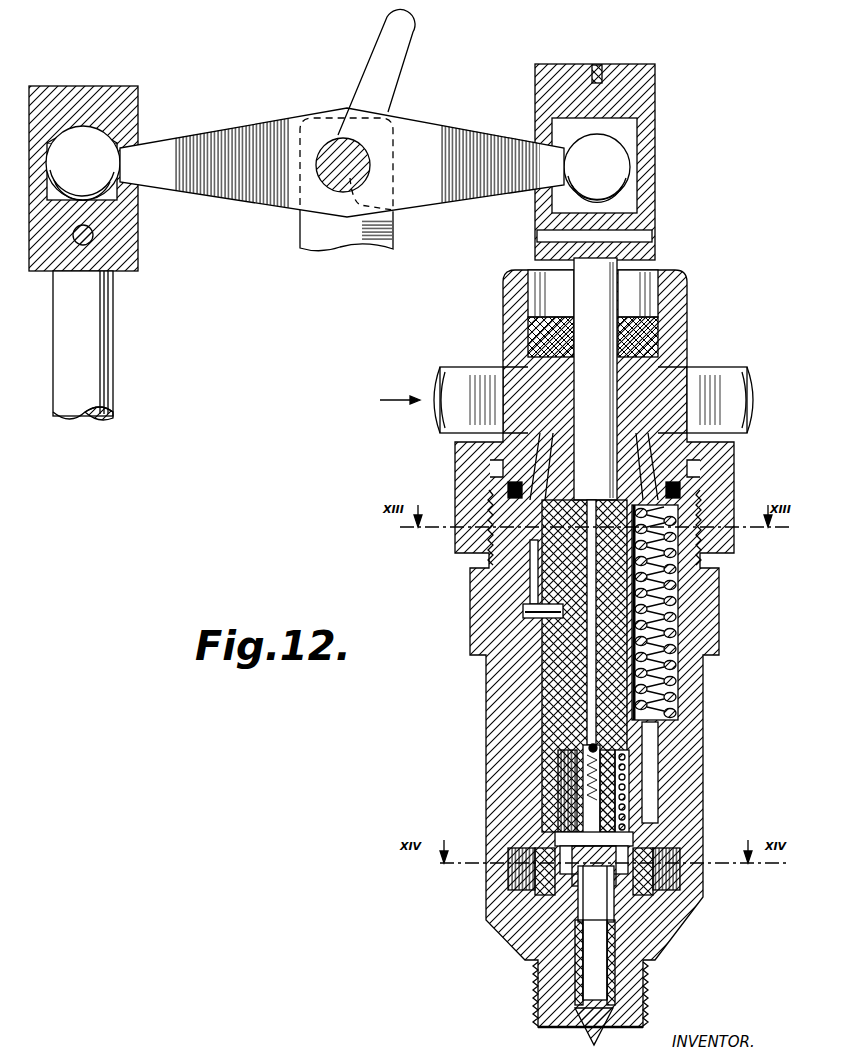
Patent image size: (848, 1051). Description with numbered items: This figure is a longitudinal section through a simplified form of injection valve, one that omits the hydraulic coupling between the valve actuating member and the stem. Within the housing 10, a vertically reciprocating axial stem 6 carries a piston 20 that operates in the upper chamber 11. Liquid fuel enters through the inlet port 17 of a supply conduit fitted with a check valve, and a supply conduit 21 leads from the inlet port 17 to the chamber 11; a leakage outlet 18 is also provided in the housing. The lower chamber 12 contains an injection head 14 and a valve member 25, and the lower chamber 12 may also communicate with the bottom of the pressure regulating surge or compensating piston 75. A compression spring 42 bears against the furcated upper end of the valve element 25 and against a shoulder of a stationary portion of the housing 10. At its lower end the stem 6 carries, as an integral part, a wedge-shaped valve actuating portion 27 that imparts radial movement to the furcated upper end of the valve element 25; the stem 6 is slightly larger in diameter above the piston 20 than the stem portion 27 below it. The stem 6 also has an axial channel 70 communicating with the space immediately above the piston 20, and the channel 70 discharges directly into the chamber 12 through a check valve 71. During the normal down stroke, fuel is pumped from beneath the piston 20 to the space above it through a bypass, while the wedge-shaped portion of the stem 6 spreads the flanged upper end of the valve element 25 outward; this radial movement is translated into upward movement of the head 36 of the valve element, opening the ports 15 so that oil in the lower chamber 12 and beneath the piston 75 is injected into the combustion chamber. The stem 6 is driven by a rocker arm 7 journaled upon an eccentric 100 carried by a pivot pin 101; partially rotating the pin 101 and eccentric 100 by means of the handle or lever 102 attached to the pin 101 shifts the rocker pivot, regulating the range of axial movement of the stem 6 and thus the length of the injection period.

The axial stem 6 is at (600, 284).
The rocker arm 7 is at (463, 142).
The housing 10 is at (712, 682).
The upper chamber 11 is at (655, 597).
The lower chamber 12 is at (655, 768).
The injection head 14 is at (610, 942).
The ports 15 is at (592, 1033).
The inlet port 17 is at (465, 376).
The leakage outlet 18 is at (723, 376).
The piston 20 is at (658, 566).
The supply conduit 21 is at (530, 584).
The valve member 25 is at (597, 980).
The valve actuating portion 27 is at (586, 699).
The valve head 36 is at (593, 1013).
The compression spring 42 is at (655, 798).
The axial channel 70 is at (592, 655).
The check valve 71 is at (600, 740).
The surge piston 75 is at (655, 747).
The eccentric 100 is at (313, 187).
The pivot pin 101 is at (390, 212).
The handle 102 is at (392, 66).